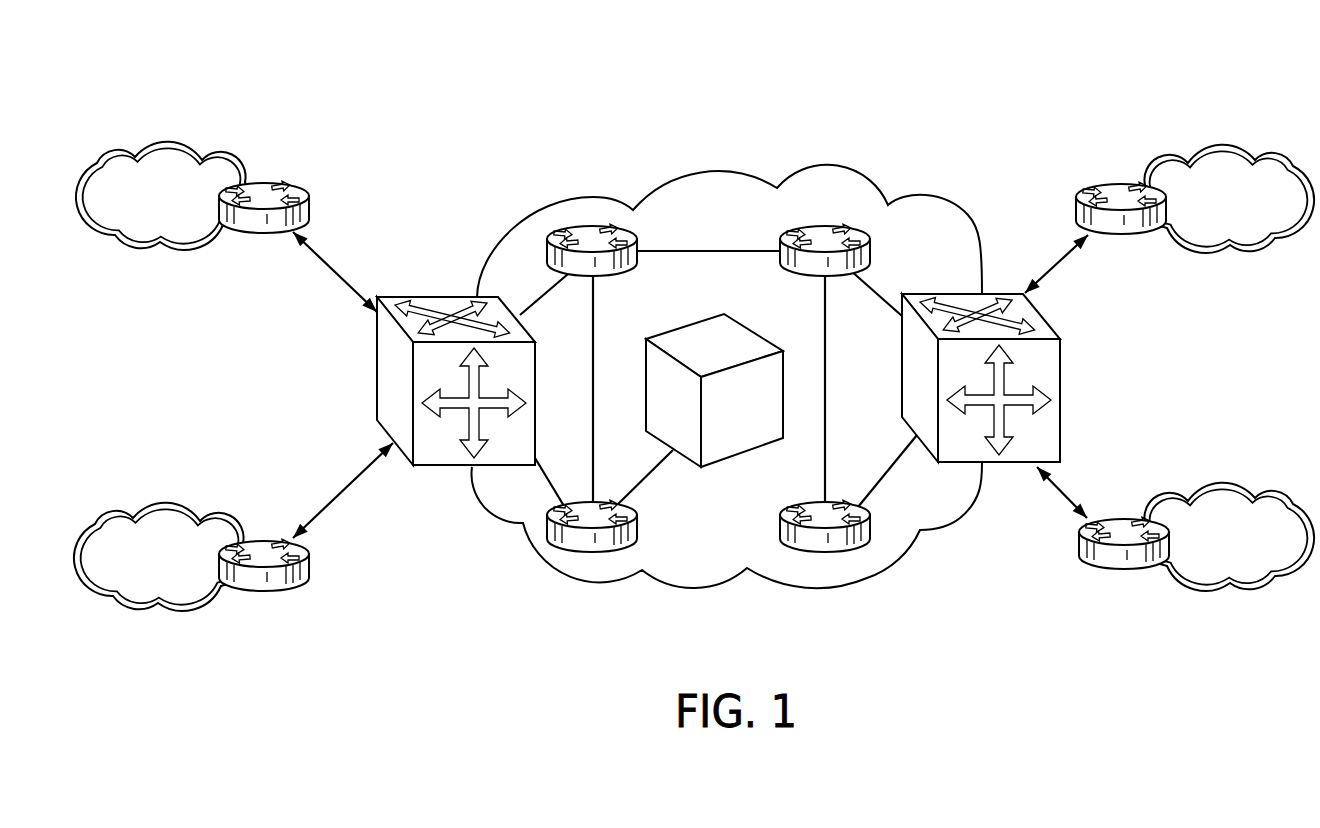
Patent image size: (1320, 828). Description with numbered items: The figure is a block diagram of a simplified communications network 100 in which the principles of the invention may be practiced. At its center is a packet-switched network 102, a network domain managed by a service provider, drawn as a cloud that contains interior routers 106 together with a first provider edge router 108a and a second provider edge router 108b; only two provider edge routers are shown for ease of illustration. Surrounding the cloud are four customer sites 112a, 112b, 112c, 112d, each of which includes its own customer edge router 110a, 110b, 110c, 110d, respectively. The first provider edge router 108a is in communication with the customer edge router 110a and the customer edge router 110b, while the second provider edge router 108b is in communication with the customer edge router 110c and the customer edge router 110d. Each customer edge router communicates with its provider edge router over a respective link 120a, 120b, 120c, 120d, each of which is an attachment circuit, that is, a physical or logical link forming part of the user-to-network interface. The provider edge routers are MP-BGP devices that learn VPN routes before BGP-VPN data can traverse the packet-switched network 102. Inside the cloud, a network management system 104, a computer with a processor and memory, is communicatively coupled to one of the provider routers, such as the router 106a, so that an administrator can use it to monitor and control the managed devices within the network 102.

The communications network 100 is at (1012, 80).
The packet-switched network 102 is at (667, 180).
The network management system 104 is at (711, 466).
The router 106 is at (843, 222).
The router 106a is at (586, 553).
The first provider edge router 108a is at (410, 297).
The second provider edge router 108b is at (1062, 370).
The customer edge router 110a is at (298, 184).
The customer edge router 110b is at (285, 592).
The customer edge router 110c is at (1090, 187).
The customer edge router 110d is at (1118, 520).
The customer site 112a is at (162, 196).
The customer site 112b is at (160, 557).
The customer site 112c is at (1228, 199).
The customer site 112d is at (1228, 537).
The link 120a is at (330, 272).
The link 120b is at (343, 493).
The link 120c is at (1053, 260).
The link 120d is at (1060, 500).